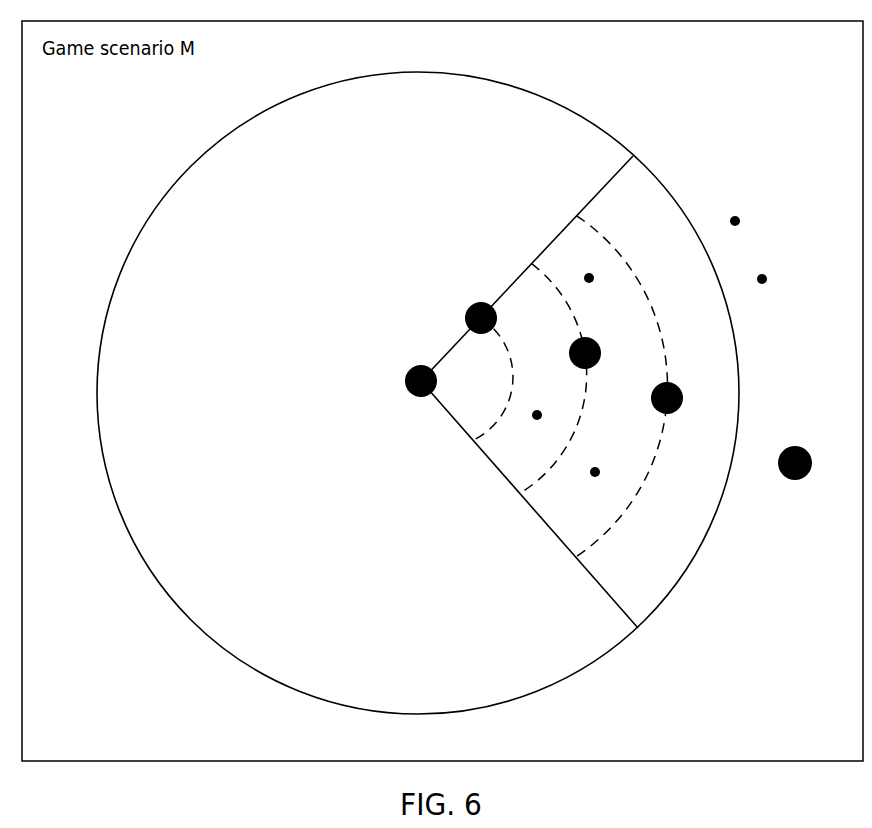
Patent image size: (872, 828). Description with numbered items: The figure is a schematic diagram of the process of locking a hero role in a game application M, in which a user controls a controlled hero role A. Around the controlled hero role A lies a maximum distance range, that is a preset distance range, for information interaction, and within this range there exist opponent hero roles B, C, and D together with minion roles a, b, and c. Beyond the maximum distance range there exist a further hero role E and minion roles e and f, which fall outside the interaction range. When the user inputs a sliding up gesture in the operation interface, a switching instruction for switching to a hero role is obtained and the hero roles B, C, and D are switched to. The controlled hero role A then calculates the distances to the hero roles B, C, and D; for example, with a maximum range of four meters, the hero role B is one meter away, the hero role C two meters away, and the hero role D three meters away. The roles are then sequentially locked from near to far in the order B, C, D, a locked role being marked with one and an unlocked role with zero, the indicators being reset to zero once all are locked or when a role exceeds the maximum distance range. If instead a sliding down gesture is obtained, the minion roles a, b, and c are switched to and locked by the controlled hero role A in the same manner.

The controlled hero role A is at (405, 381).
The hero role B is at (495, 318).
The hero role C is at (593, 351).
The hero role D is at (669, 412).
The hero role E is at (803, 474).
The minion role a is at (537, 427).
The minion role b is at (603, 469).
The minion role c is at (598, 282).
The minion role e is at (743, 216).
The minion role f is at (772, 273).